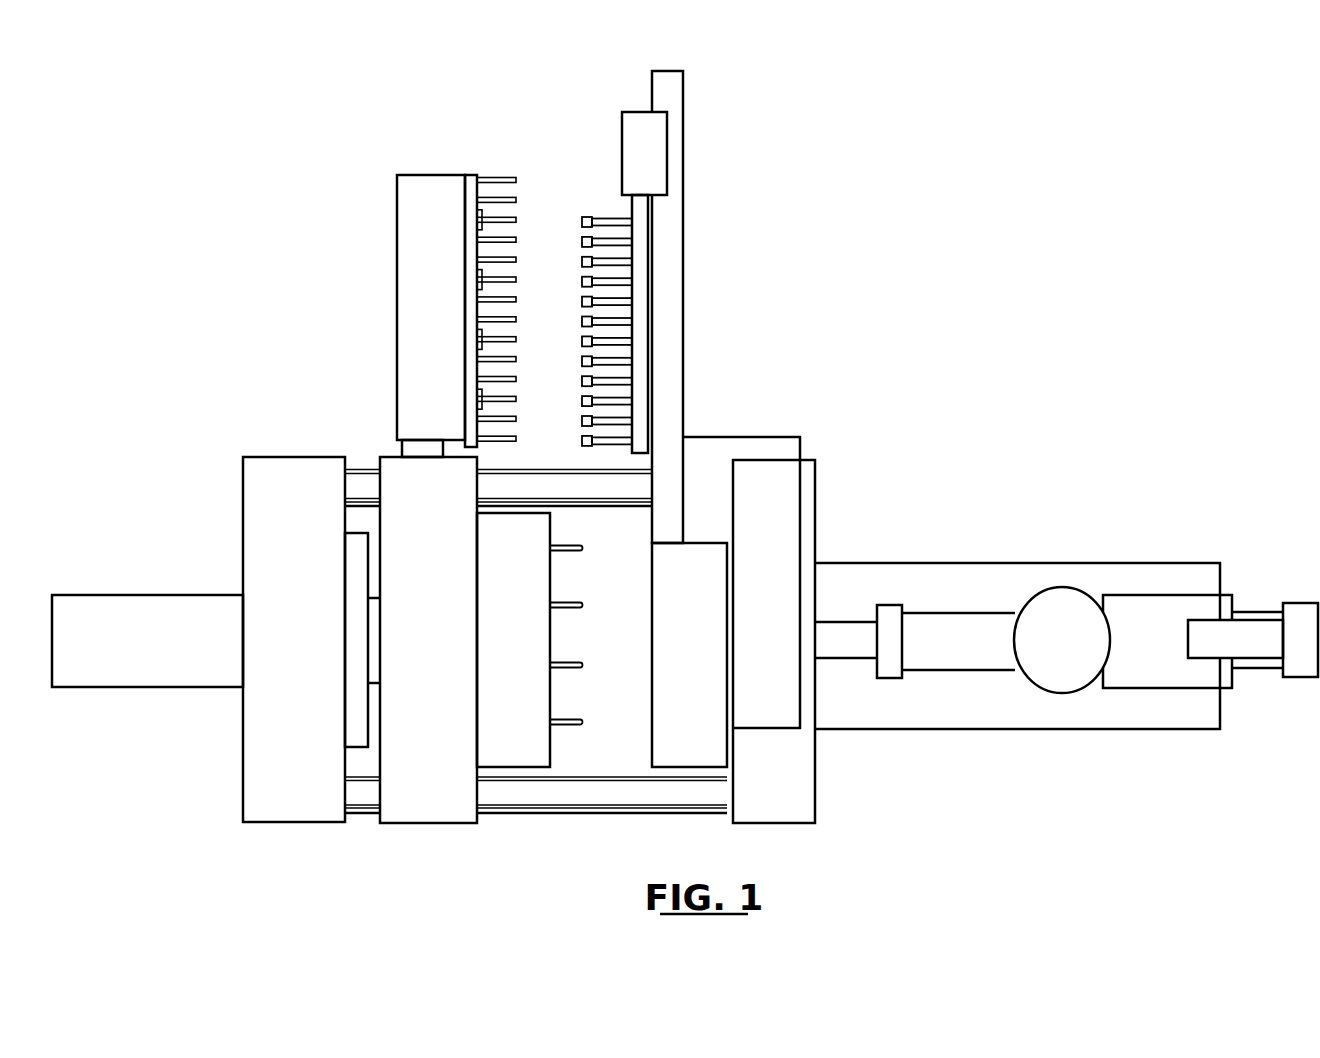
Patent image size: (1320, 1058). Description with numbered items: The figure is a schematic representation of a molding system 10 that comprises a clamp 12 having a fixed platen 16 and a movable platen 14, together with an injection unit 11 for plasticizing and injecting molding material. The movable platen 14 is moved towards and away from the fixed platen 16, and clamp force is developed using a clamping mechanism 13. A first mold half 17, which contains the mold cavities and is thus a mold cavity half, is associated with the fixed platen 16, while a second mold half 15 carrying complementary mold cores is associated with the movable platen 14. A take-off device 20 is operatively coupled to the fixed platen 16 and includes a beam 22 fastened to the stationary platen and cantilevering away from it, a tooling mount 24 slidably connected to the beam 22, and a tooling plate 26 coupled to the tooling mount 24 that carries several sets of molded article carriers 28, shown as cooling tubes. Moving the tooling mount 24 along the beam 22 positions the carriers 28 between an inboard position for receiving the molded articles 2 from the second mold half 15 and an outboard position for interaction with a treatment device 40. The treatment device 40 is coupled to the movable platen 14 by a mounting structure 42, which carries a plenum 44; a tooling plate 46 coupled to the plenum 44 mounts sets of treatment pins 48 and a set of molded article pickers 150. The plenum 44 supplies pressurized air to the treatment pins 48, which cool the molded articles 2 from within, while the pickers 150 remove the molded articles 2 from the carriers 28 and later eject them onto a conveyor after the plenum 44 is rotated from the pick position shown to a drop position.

The molding system 10 is at (757, 380).
The injection unit 11 is at (967, 545).
The clamp 12 is at (220, 745).
The clamping mechanism 13 is at (355, 728).
The movable platen 14 is at (428, 640).
The second mold half 15 is at (530, 640).
The fixed platen 16 is at (749, 630).
The first mold half 17 is at (689, 655).
The take-off device 20 is at (694, 303).
The beam 22 is at (677, 245).
The tooling mount 24 is at (657, 130).
The tooling plate 26 is at (640, 292).
The molded article carriers 28 is at (618, 222).
The molded articles 2 is at (590, 217).
The treatment device 40 is at (421, 275).
The mounting structure 42 is at (410, 447).
The plenum 44 is at (408, 322).
The tooling plate 46 is at (467, 180).
The treatment pins 48 is at (500, 181).
The molded article pickers 150 is at (479, 238).